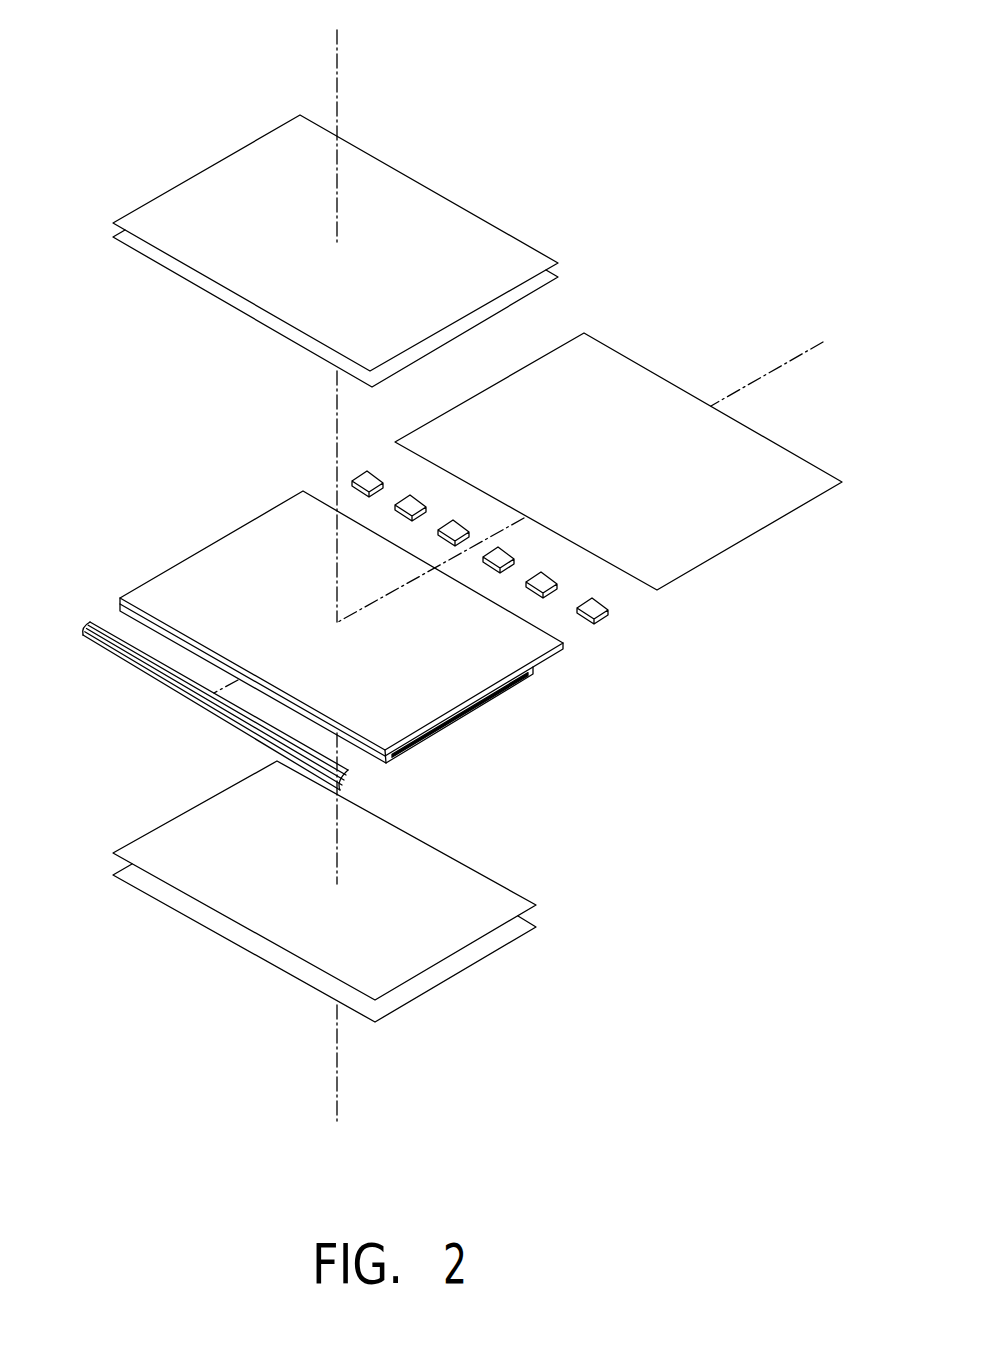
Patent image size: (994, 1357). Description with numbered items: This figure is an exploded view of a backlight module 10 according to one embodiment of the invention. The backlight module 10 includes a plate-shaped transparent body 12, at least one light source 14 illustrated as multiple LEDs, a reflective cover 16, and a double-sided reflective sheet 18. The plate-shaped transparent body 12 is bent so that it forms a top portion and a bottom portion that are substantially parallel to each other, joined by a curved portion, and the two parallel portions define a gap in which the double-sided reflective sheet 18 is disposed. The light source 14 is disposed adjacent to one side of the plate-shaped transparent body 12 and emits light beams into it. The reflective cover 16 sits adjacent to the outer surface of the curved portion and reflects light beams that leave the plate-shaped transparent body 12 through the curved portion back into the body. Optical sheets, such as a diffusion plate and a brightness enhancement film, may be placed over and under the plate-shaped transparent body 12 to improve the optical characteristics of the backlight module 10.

The backlight module 10 is at (678, 43).
The plate-shaped transparent body 12 is at (460, 722).
The light source 14 is at (608, 620).
The reflective cover 16 is at (217, 715).
The double-sided reflective sheet 18 is at (627, 353).